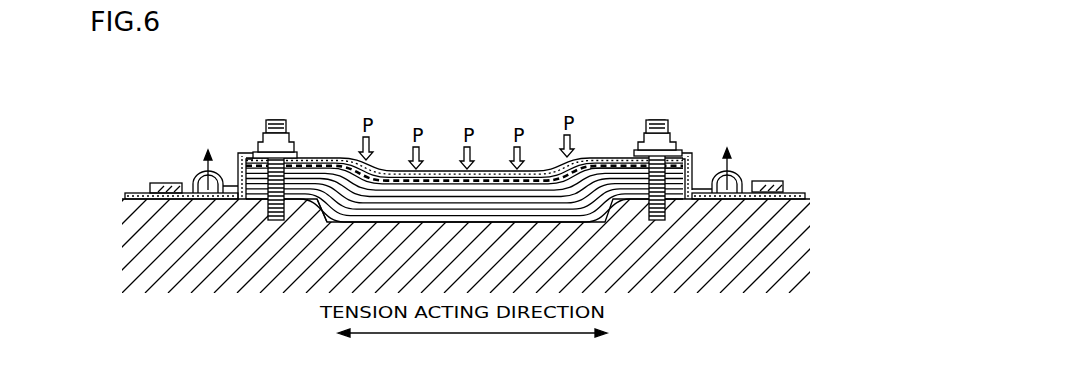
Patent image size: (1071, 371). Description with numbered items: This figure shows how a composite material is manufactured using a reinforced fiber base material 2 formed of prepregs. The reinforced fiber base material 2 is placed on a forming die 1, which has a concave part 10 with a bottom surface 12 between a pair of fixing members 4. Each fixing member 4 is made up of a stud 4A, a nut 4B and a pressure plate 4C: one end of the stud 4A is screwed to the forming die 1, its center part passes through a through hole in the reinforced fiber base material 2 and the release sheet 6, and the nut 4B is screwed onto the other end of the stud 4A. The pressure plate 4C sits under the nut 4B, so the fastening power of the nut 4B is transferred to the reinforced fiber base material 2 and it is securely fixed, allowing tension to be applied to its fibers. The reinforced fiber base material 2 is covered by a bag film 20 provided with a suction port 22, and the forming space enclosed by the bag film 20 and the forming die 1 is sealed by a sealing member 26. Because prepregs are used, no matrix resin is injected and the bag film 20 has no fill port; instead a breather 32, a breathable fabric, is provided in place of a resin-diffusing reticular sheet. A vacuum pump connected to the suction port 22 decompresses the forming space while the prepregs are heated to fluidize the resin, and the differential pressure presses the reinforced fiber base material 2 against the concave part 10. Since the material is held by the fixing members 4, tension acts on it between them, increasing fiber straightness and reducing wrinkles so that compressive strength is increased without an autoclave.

The forming die 1 is at (803, 252).
The reinforced fiber base material 2 is at (311, 193).
The fixing member 4 is at (667, 119).
The stud 4A is at (275, 120).
The nut 4B is at (259, 142).
The pressure plate 4C is at (247, 152).
The release sheet 6 is at (628, 166).
The concave part 10 is at (318, 201).
The bottom surface 12 is at (558, 207).
The bag film 20 is at (588, 157).
The suction port 22 is at (200, 176).
The sealing member 26 is at (152, 190).
The breather 32 is at (609, 160).